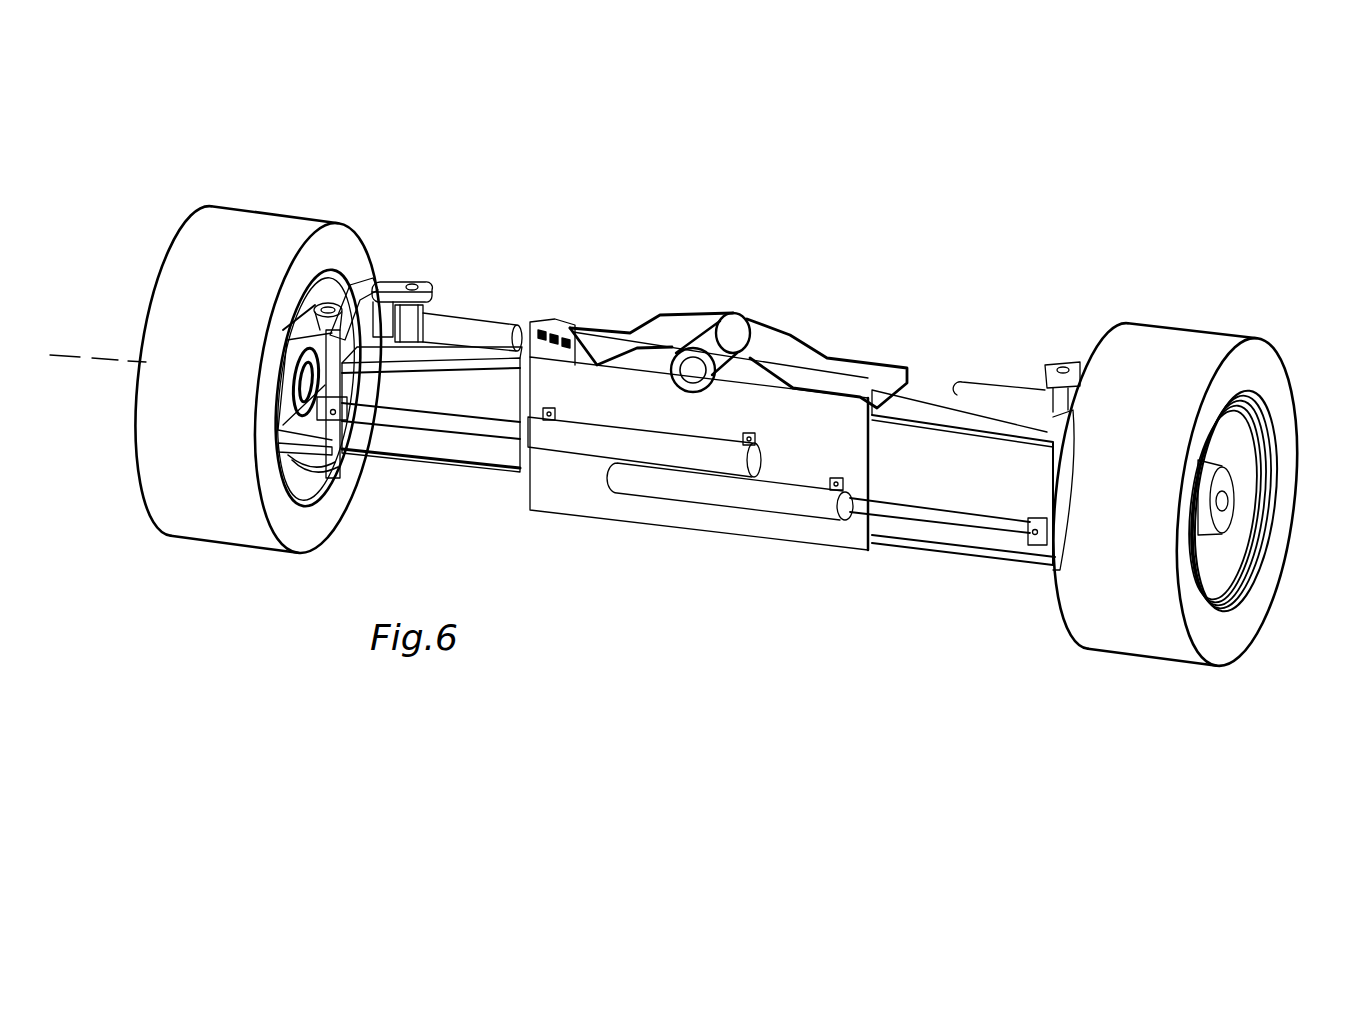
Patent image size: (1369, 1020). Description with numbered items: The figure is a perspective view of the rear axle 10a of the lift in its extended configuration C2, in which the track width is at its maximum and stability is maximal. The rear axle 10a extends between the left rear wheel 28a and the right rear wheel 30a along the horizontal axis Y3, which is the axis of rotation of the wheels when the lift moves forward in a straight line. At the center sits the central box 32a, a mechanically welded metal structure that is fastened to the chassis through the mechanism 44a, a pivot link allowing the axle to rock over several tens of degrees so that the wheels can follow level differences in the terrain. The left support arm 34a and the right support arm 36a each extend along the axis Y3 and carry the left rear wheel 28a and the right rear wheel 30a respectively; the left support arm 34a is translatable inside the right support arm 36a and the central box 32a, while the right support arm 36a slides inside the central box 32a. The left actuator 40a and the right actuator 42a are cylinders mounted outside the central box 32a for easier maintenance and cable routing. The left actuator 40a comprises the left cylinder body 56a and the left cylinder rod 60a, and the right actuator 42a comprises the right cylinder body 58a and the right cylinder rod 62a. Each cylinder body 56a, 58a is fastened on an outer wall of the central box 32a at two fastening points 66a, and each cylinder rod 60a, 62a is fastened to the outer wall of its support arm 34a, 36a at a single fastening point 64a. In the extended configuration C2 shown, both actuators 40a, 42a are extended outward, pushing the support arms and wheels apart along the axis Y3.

The rear axle 10a is at (213, 143).
The left rear wheel 28a is at (190, 318).
The right rear wheel 30a is at (1157, 352).
The central box 32a is at (680, 325).
The left support arm 34a is at (486, 304).
The right support arm 36a is at (972, 358).
The left actuator 40a is at (570, 470).
The right actuator 42a is at (764, 527).
The mechanism 44a is at (727, 327).
The left cylinder body 56a is at (608, 445).
The right cylinder body 58a is at (805, 503).
The left cylinder rod 60a is at (433, 422).
The right cylinder rod 62a is at (973, 523).
The fastening point 64a is at (345, 416).
The fastening point 66a is at (550, 408).
The axis Y3 is at (1230, 502).
The extended configuration C2 is at (115, 570).